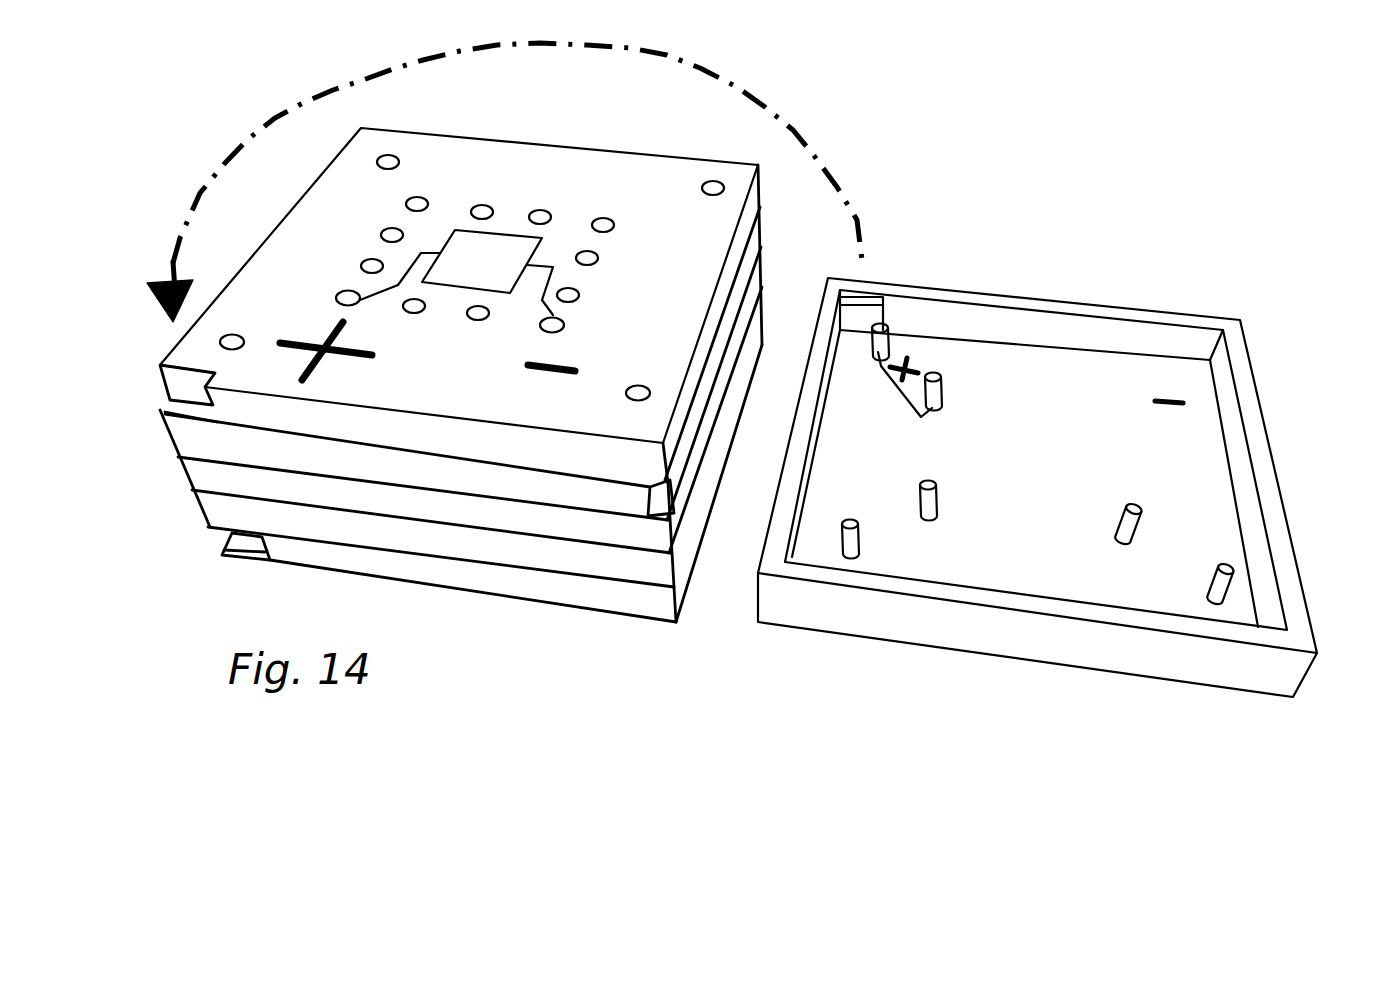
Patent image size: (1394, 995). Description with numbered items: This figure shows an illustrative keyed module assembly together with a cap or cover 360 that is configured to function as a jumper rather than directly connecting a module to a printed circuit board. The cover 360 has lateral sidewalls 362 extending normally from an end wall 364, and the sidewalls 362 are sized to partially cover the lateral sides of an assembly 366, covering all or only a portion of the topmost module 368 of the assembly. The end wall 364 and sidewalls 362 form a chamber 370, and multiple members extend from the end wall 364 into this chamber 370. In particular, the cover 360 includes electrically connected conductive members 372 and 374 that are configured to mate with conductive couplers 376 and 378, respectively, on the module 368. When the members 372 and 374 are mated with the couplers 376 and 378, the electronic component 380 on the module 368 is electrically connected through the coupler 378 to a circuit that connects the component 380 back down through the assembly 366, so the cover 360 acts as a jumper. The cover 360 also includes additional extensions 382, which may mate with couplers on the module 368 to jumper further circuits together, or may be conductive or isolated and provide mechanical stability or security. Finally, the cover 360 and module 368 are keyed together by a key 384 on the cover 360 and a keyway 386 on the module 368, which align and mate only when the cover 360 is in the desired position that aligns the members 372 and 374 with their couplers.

The cover 360 is at (1268, 290).
The lateral sidewalls 362 is at (820, 308).
The end wall 364 is at (980, 356).
The assembly 366 is at (430, 630).
The topmost module 368 is at (531, 165).
The chamber 370 is at (1203, 434).
The conductive member 372 is at (943, 390).
The conductive member 374 is at (872, 348).
The conductive coupler 376 is at (338, 296).
The conductive coupler 378 is at (238, 330).
The electronic component 380 is at (502, 275).
The extensions 382 is at (937, 495).
The key 384 is at (862, 316).
The keyway 386 is at (166, 390).